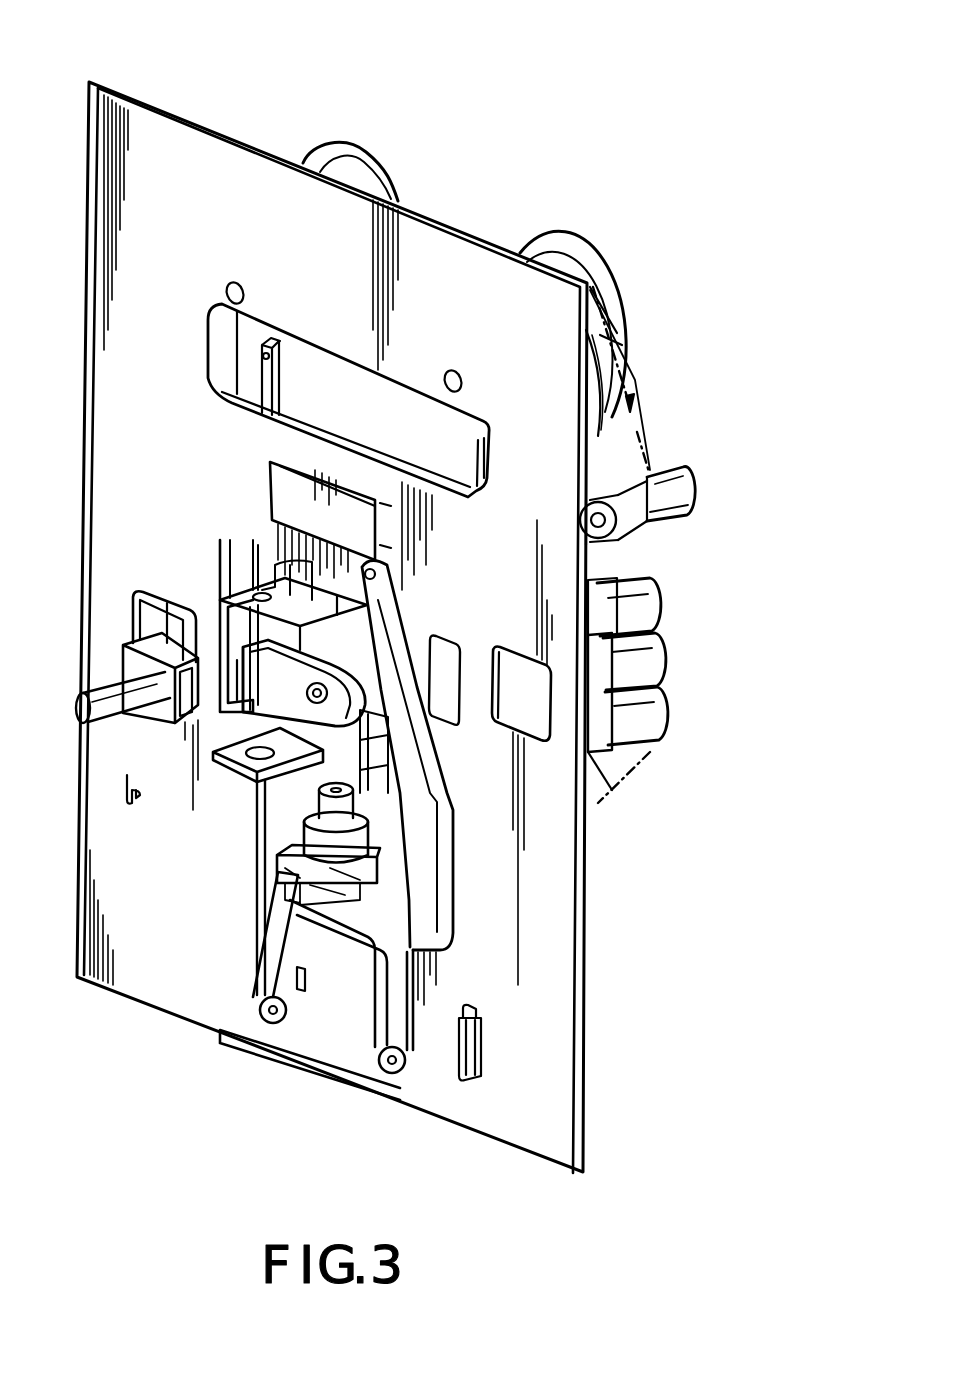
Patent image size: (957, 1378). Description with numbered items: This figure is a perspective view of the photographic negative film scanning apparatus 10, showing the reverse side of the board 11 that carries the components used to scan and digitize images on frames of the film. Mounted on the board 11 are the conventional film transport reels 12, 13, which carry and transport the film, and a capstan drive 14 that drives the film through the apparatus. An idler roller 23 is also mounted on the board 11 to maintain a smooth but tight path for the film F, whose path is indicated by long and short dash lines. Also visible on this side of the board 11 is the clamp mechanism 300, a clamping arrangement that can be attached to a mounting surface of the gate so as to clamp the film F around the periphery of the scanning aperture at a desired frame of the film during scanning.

The photographic negative film scanning apparatus 10 is at (285, 108).
The board 11 is at (176, 175).
The film transport reel 12 is at (353, 157).
The film transport reel 13 is at (529, 244).
The film F is at (632, 440).
The idler roller 23 is at (672, 479).
The capstan drive 14 is at (683, 700).
The clamp mechanism 300 is at (277, 837).